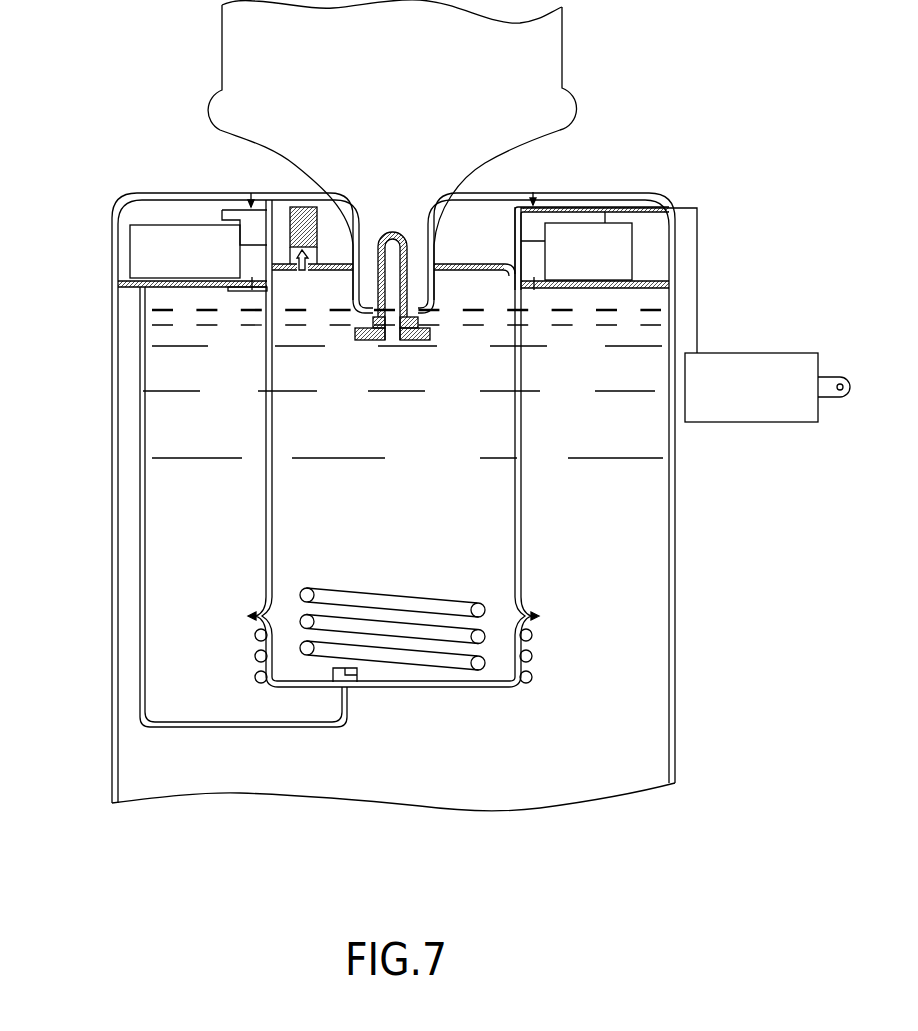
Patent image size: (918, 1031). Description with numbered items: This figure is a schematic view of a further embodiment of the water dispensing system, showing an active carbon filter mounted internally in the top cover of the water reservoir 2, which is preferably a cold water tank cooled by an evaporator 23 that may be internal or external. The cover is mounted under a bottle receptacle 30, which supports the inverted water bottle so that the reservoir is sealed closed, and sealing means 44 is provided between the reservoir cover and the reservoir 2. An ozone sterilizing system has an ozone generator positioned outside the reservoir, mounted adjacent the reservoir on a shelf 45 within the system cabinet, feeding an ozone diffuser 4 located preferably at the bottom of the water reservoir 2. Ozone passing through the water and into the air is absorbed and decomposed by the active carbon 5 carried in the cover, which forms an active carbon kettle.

The water reservoir 2 is at (520, 502).
The ozone diffuser 4 is at (350, 675).
The active carbon 5 is at (303, 207).
The evaporator 23 is at (300, 595).
The bottle receptacle 30 is at (485, 197).
The sealing means 44 is at (510, 275).
The shelf 45 is at (170, 288).